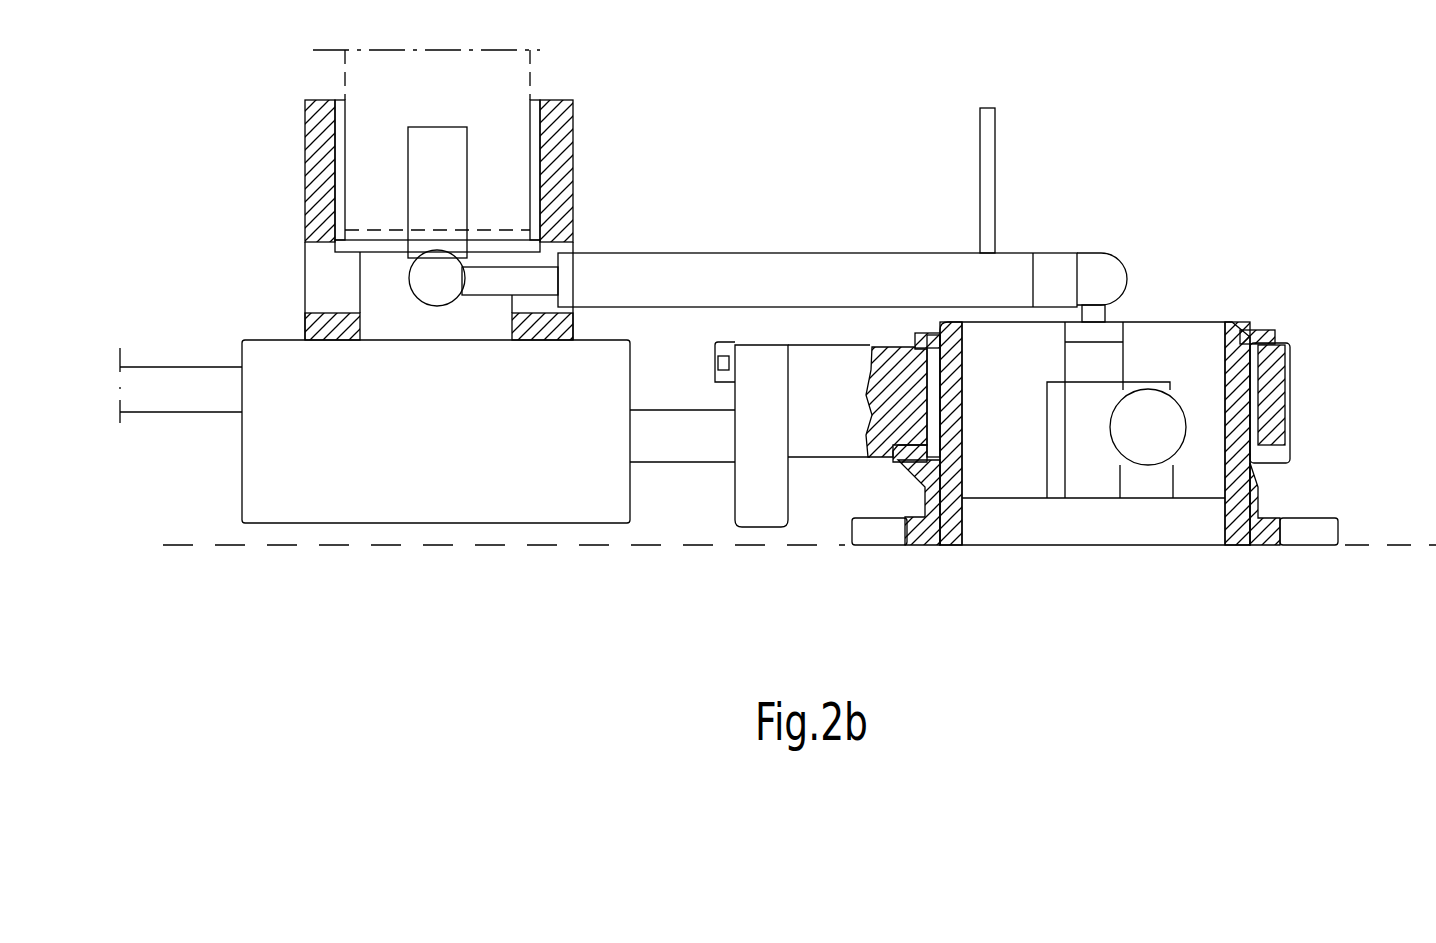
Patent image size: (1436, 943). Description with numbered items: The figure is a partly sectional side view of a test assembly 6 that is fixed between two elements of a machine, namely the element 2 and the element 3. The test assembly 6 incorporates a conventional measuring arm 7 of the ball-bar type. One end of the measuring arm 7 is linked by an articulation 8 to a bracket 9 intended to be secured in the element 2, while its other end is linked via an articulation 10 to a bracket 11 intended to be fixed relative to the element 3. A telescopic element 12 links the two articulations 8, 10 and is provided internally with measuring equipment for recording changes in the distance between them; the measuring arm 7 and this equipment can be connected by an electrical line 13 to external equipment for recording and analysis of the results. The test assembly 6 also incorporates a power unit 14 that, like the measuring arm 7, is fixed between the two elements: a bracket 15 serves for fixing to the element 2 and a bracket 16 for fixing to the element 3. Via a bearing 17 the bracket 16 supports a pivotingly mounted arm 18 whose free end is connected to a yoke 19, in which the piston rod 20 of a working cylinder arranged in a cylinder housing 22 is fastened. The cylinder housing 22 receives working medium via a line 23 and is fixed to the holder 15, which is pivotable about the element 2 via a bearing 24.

The second element 2 is at (353, 70).
The second element 3 is at (1376, 615).
The test assembly 6 is at (1105, 331).
The measuring arm 7 is at (871, 215).
The articulation 8 is at (428, 285).
The bracket 9 is at (467, 146).
The articulation 10 is at (1110, 282).
The bracket 11 is at (1085, 439).
The telescopic element 12 is at (600, 266).
The electrical line 13 is at (990, 171).
The power unit 14 is at (721, 561).
The bracket 15 is at (320, 148).
The bracket 16 is at (1304, 477).
The bearing 17 is at (1259, 326).
The arm 18 is at (845, 437).
The yoke 19 is at (768, 420).
The piston rod 20 is at (707, 444).
The cylinder housing 22 is at (442, 448).
The line 23 is at (200, 365).
The bearing 24 is at (552, 88).